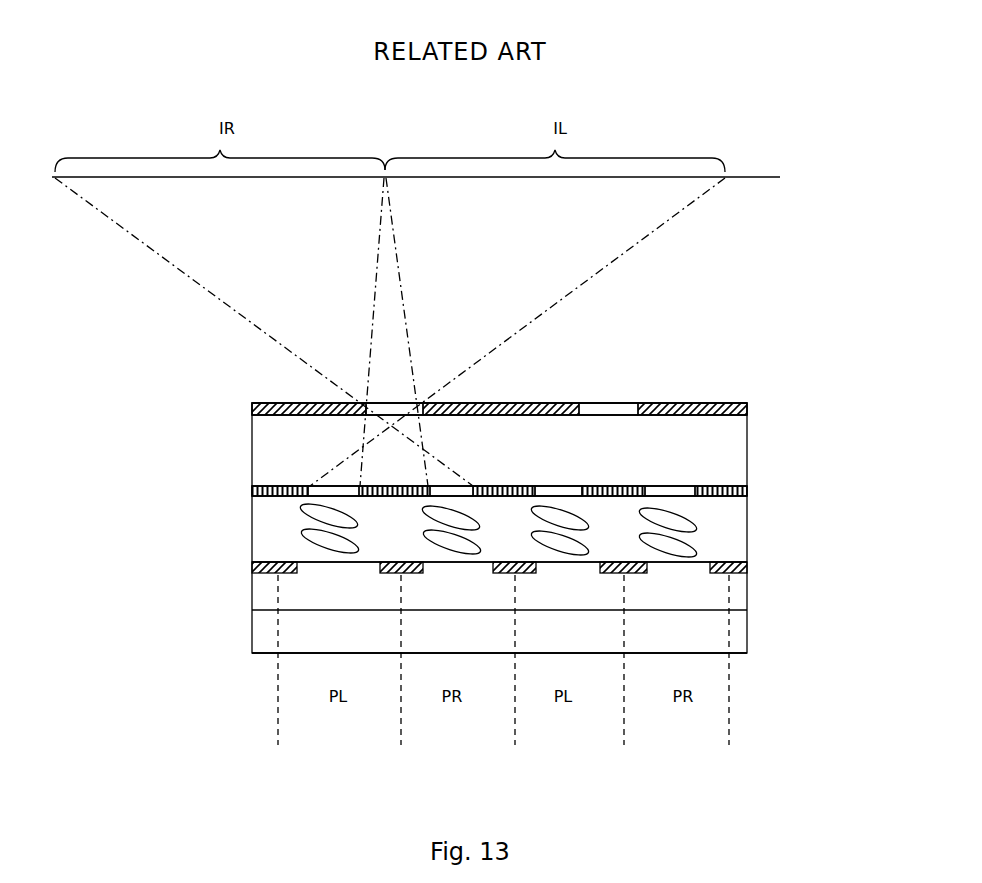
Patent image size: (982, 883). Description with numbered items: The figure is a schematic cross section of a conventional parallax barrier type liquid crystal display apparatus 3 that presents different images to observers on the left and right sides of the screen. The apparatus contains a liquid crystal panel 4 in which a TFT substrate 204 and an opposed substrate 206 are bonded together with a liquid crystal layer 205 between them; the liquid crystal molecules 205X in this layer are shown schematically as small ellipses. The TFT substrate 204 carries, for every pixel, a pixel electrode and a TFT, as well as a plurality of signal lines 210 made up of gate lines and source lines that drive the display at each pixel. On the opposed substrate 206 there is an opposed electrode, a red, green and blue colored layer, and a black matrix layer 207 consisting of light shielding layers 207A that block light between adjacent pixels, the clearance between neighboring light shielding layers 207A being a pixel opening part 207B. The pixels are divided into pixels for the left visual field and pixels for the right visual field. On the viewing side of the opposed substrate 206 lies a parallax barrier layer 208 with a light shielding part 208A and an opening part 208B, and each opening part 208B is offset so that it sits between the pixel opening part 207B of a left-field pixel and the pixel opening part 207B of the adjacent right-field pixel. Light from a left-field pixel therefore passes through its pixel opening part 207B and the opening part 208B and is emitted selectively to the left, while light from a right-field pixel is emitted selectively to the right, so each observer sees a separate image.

The liquid crystal display apparatus 3 is at (762, 381).
The liquid crystal panel 4 is at (802, 405).
The TFT substrate 204 is at (750, 563).
The liquid crystal layer 205 is at (452, 521).
The liquid crystal molecules 205X is at (320, 538).
The opposed substrate 206 is at (750, 405).
The light shielding layer 207 is at (442, 380).
The light shielding layer 207A is at (252, 490).
The pixel opening part 207B is at (572, 486).
The parallax barrier layer 208 is at (429, 342).
The light shielding part 208A is at (272, 403).
The opening part 208B is at (601, 403).
The signal lines 210 is at (253, 578).